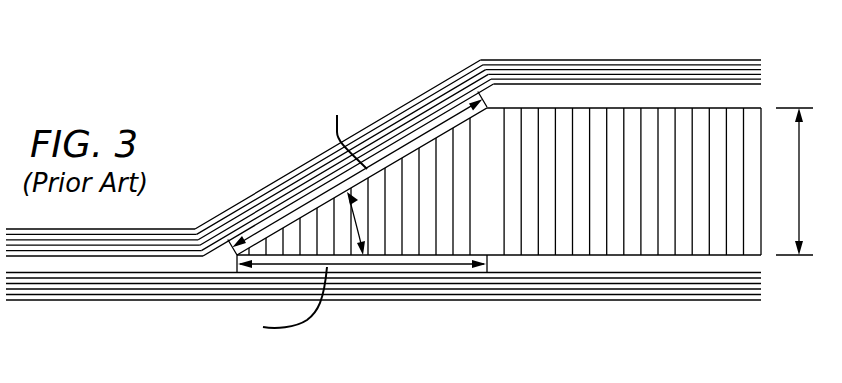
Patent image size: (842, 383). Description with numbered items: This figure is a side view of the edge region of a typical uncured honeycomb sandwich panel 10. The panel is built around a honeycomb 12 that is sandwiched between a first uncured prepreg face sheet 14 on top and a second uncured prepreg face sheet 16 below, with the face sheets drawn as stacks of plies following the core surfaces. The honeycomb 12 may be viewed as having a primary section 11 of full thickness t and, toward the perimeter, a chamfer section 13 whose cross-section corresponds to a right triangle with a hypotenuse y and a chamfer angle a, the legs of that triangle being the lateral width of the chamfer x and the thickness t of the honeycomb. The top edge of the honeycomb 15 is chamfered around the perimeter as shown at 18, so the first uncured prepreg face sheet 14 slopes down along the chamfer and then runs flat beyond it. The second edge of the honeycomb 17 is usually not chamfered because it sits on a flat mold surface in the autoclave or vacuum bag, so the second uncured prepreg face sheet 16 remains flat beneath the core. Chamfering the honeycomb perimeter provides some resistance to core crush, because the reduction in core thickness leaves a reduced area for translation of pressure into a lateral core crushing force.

The uncured honeycomb sandwich panel 10 is at (423, 67).
The primary section 11 is at (615, 137).
The honeycomb 12 is at (752, 133).
The chamfer section 13 is at (430, 247).
The first uncured prepreg face sheet 14 is at (620, 60).
The top edge of the honeycomb 15 is at (688, 107).
The second uncured prepreg face sheet 16 is at (560, 299).
The second edge of the honeycomb 17 is at (632, 255).
The chamfer 18 is at (308, 143).